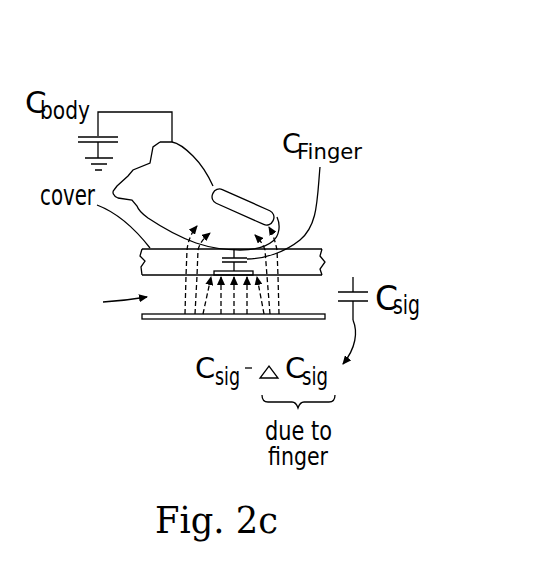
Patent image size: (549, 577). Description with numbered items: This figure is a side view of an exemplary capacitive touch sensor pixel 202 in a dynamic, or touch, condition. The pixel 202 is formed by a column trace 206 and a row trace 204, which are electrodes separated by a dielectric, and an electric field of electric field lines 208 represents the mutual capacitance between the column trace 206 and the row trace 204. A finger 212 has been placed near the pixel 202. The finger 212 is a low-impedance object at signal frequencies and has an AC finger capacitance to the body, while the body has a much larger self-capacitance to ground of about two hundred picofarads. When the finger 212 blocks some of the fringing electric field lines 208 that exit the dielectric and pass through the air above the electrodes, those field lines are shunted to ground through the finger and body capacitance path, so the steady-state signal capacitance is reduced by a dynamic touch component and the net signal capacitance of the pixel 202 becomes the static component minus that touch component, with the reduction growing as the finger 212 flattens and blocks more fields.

The pixel 202 is at (164, 332).
The row trace 204 is at (156, 319).
The column trace 206 is at (213, 272).
The electric field lines 208 is at (282, 292).
The finger 212 is at (199, 161).